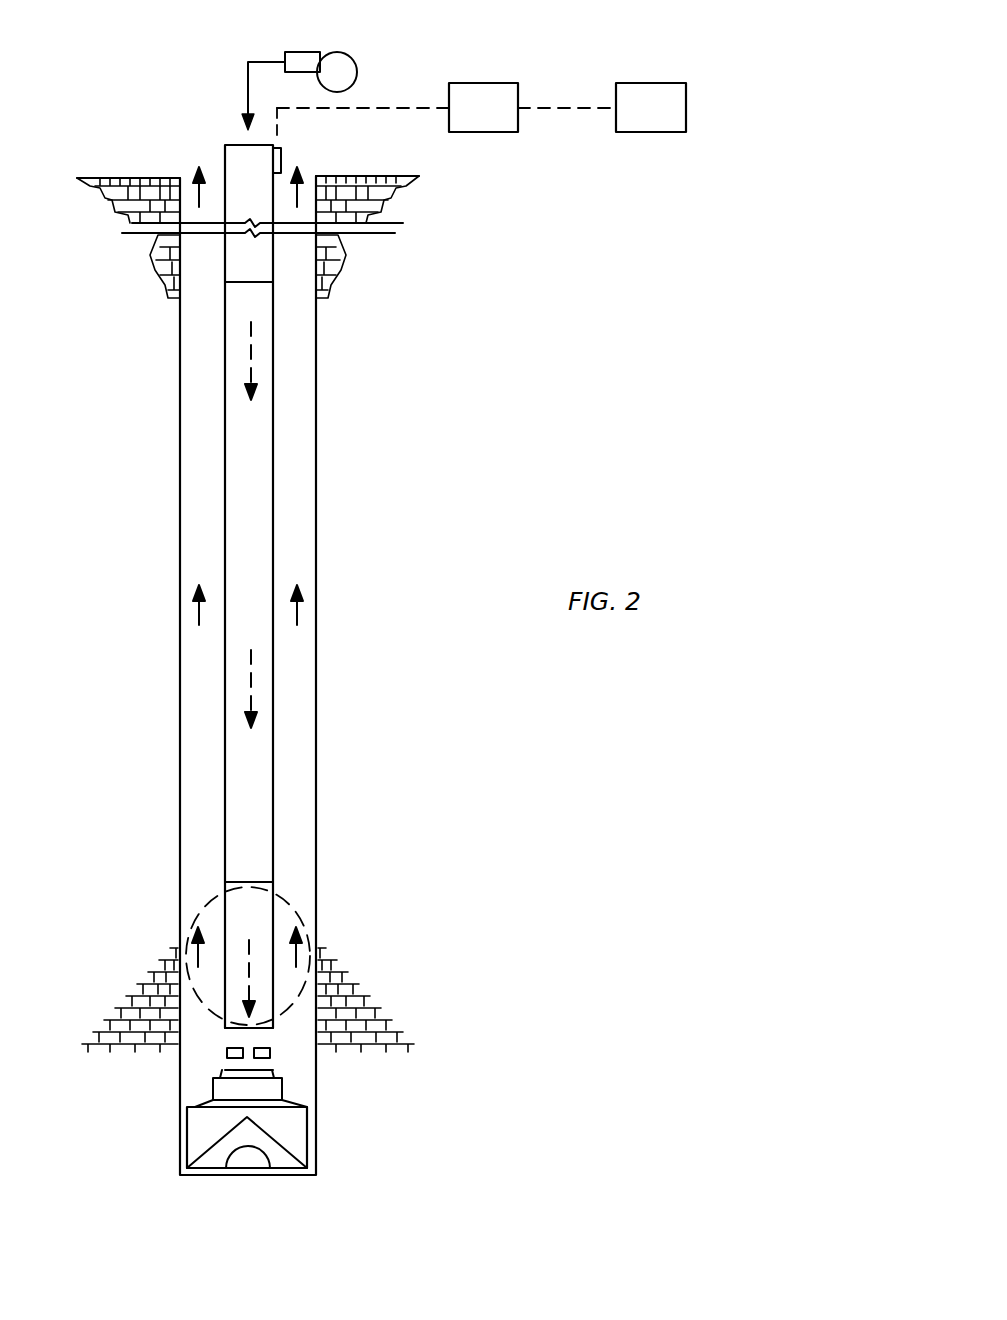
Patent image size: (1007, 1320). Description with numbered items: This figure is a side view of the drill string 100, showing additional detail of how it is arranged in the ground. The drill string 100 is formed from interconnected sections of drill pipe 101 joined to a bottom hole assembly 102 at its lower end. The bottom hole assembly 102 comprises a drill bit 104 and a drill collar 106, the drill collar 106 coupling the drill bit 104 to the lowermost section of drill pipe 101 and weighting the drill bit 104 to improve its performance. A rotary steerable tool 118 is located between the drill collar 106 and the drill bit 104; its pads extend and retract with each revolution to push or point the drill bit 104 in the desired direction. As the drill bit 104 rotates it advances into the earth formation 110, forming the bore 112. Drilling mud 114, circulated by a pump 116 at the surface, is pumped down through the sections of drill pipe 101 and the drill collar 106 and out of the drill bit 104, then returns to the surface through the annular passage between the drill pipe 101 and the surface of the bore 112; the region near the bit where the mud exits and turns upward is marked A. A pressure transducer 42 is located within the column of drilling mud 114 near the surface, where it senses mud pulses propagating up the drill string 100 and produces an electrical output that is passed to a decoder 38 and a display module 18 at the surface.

The drill string 100 is at (208, 455).
The drill pipe 101 is at (233, 202).
The bottom hole assembly 102 is at (200, 1042).
The drill bit 104 is at (192, 1117).
The drill collar 106 is at (273, 803).
The earth formation 110 is at (152, 280).
The bore 112 is at (196, 518).
The drilling mud 114 is at (247, 98).
The pump 116 is at (308, 60).
The rotary steerable tool 118 is at (273, 1040).
The decoder 38 is at (397, 107).
The display module 18 is at (602, 107).
The pressure transducer 42 is at (281, 160).
The region A is at (252, 957).